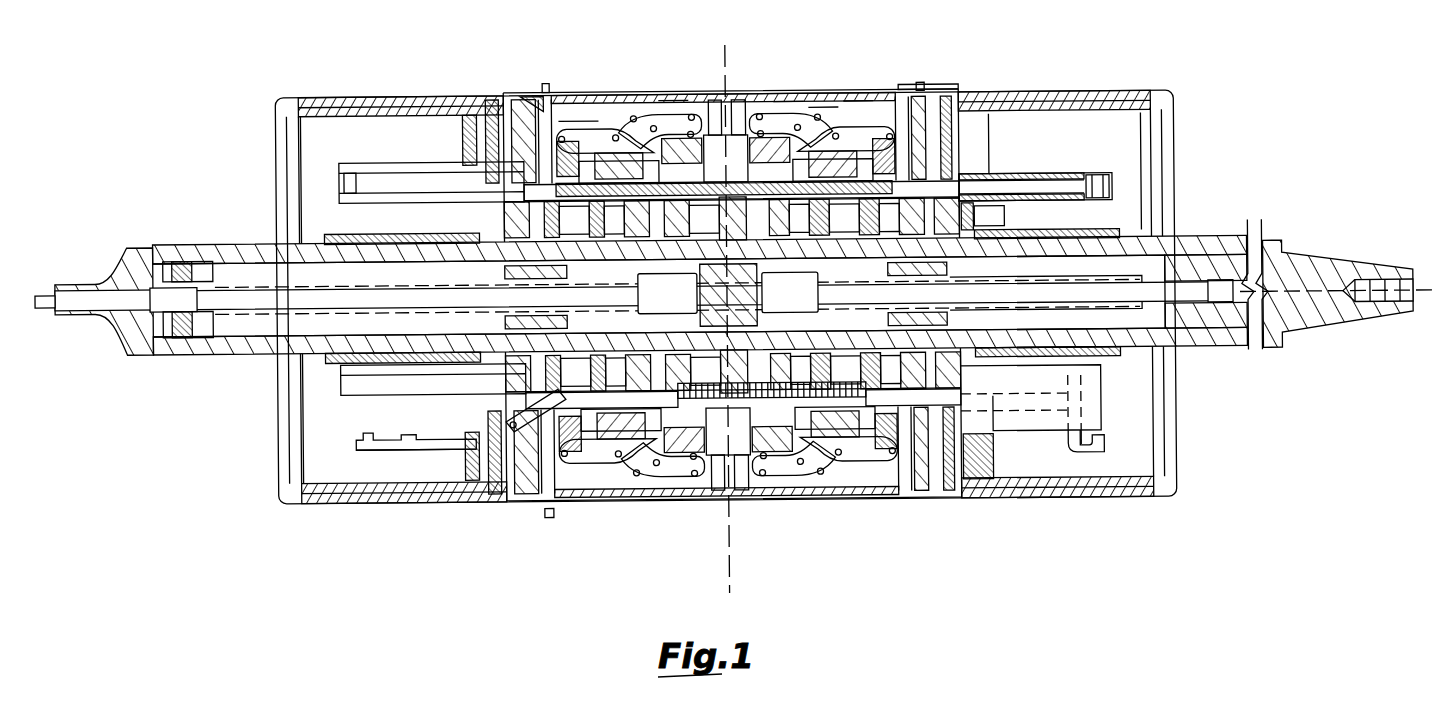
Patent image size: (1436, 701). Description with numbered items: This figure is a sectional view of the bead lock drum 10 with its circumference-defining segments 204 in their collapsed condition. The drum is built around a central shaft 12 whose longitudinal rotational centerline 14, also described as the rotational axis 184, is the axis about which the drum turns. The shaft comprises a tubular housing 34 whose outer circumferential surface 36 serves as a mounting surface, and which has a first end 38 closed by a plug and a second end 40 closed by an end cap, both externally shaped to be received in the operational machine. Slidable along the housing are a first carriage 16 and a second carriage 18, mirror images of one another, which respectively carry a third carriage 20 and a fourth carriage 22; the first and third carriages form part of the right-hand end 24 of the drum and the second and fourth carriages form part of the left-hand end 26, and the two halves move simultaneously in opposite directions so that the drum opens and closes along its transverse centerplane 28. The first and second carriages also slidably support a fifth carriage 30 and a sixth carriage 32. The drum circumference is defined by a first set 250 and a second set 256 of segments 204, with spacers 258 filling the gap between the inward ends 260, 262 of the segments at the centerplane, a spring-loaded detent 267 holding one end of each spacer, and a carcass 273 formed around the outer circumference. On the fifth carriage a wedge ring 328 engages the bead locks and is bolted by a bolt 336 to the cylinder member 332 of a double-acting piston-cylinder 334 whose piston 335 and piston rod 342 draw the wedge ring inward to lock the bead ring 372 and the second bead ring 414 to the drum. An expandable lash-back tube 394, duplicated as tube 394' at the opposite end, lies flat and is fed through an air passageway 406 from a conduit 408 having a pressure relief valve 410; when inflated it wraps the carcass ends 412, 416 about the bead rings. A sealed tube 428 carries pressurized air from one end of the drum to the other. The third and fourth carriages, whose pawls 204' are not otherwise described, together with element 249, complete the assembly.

The bead lock drum 10 is at (1182, 161).
The central shaft 12 is at (1215, 229).
The longitudinal rotational centerline 14 is at (1320, 295).
The first carriage 16 is at (786, 355).
The second carriage 18 is at (671, 355).
The third carriage 20 is at (886, 350).
The fourth carriage 22 is at (470, 395).
The right-hand end 24 is at (1175, 185).
The left-hand end 26 is at (277, 167).
The transverse centerplane 28 is at (728, 47).
The fifth carriage 30 is at (968, 216).
The sixth carriage 32 is at (477, 210).
The tubular housing 34 is at (258, 342).
The outer circumferential surface 36 is at (300, 212).
The first end 38 is at (1195, 349).
The second end 40 is at (180, 350).
The longitudinal rotational axis 184 is at (70, 292).
The circumference-defining segment 204 is at (823, 300).
The left pawl 204' is at (630, 292).
The center block 249 is at (690, 94).
The first set of segments 250 is at (827, 97).
The second set of segments 256 is at (594, 94).
The spacer 258 is at (745, 94).
The inward end of segment 260 is at (790, 94).
The inward end of segment 262 is at (667, 92).
The spring-loaded detent 267 is at (693, 499).
The carcass 273 is at (860, 94).
The wedge ring 328 is at (937, 386).
The cylinder member 332 is at (1036, 420).
The double-acting piston-cylinder 334 is at (1058, 440).
The piston 335 is at (1073, 416).
The bolt 336 is at (963, 415).
The piston rod 342 is at (1050, 401).
The bead ring 372 is at (912, 87).
The expandable lash-back tube 394 is at (1054, 79).
The expandable lash-back tube 394' is at (401, 83).
The air passageway 406 is at (497, 499).
The conduit 408 is at (452, 435).
The pressure relief valve 410 is at (360, 431).
The end of carcass 412 is at (922, 91).
The second bead ring 414 is at (547, 82).
The end of carcass 416 is at (540, 94).
The sealed tube 428 is at (1018, 176).